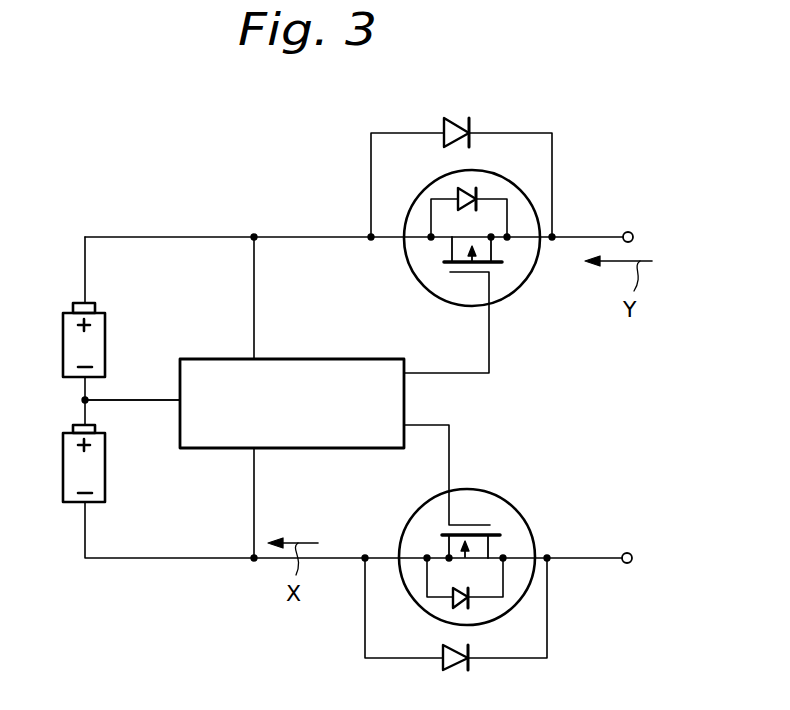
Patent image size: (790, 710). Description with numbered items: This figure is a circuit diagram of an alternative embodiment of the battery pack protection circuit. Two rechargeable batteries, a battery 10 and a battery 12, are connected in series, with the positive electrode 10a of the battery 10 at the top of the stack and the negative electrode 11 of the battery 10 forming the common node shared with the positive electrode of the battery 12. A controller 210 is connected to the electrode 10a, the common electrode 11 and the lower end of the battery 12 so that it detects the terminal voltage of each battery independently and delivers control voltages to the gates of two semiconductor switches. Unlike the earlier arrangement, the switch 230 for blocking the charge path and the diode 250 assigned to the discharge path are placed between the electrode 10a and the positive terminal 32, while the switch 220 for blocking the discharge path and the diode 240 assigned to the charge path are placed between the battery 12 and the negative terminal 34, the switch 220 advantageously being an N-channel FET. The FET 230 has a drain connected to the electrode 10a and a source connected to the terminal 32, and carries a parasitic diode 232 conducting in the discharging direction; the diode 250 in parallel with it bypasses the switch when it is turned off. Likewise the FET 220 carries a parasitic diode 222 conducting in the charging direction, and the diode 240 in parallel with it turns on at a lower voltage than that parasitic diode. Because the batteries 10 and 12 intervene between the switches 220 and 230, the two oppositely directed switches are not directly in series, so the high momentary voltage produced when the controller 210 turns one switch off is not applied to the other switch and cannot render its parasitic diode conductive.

The positive electrode 10a is at (163, 233).
The battery 10 is at (107, 320).
The negative electrode 11 is at (149, 399).
The battery 12 is at (107, 463).
The controller 210 is at (307, 358).
The switch for blocking a charge path 230 is at (520, 290).
The parasitic diode 232 is at (469, 187).
The diode assigned to the discharge path 250 is at (465, 117).
The positive terminal 32 is at (631, 232).
The switch for blocking a discharge path 220 is at (507, 496).
The parasitic diode 222 is at (475, 603).
The diode assigned to the charge path 240 is at (475, 665).
The negative terminal 34 is at (634, 551).